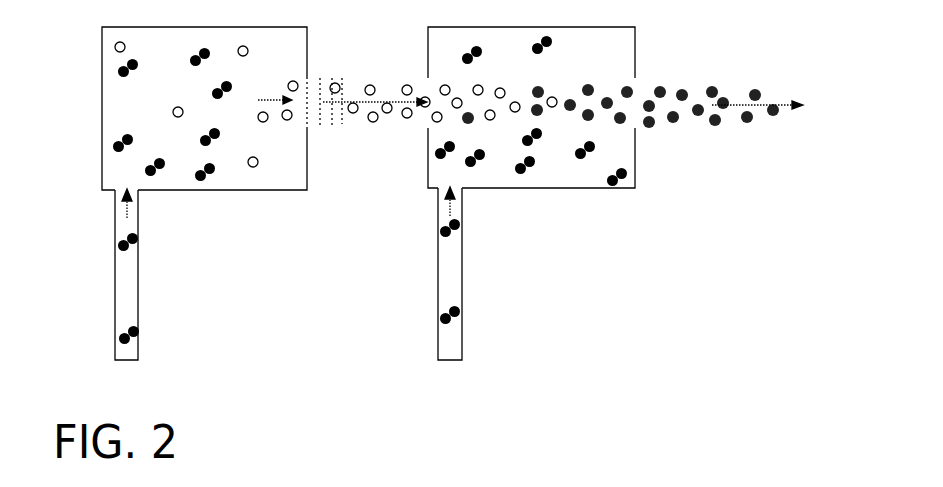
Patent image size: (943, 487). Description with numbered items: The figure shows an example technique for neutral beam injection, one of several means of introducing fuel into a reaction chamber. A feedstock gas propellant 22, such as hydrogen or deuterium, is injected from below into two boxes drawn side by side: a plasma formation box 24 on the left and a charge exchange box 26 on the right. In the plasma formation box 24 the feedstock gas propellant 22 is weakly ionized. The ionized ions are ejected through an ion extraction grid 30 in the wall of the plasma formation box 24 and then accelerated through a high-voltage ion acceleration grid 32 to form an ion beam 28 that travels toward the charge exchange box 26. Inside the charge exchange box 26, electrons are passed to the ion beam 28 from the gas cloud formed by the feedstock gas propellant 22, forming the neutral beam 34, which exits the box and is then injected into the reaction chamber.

The feedstock gas propellant 22 is at (432, 252).
The plasma formation box 24 is at (204, 108).
The charge exchange box 26 is at (531, 107).
The ion beam 28 is at (376, 99).
The ion extraction grid 30 is at (305, 77).
The high-voltage ion acceleration grid 32 is at (327, 72).
The neutral beam 34 is at (723, 102).